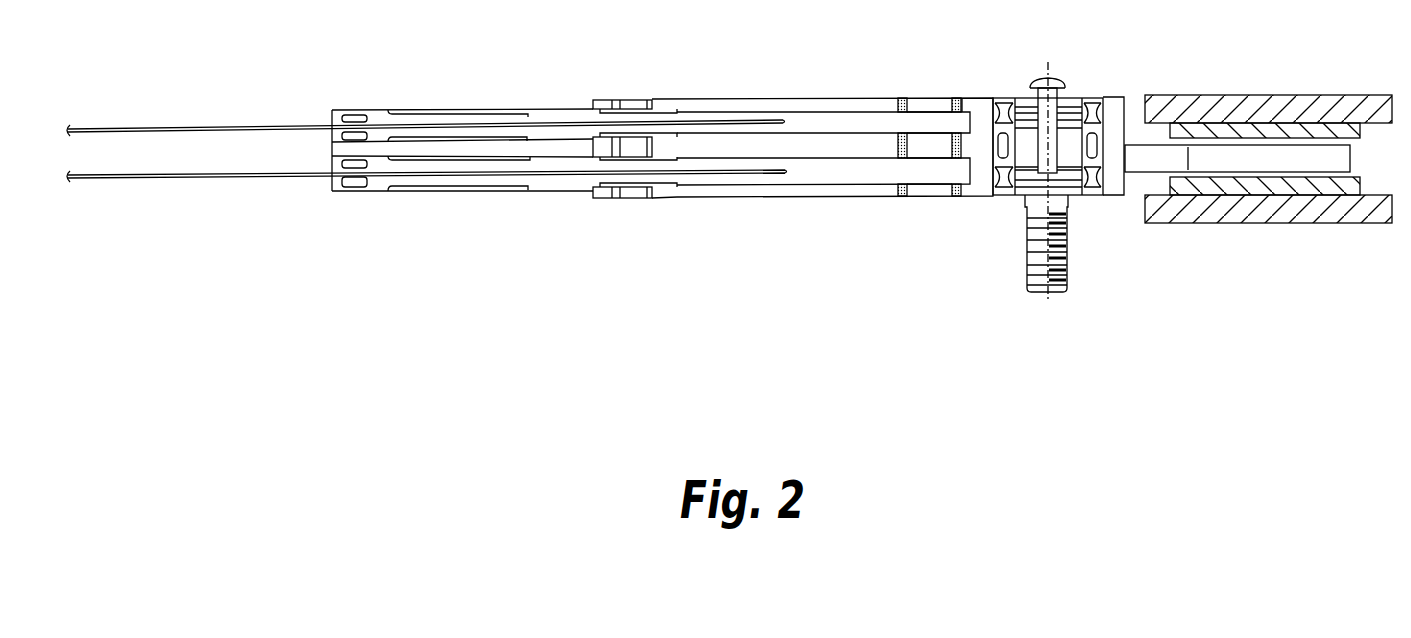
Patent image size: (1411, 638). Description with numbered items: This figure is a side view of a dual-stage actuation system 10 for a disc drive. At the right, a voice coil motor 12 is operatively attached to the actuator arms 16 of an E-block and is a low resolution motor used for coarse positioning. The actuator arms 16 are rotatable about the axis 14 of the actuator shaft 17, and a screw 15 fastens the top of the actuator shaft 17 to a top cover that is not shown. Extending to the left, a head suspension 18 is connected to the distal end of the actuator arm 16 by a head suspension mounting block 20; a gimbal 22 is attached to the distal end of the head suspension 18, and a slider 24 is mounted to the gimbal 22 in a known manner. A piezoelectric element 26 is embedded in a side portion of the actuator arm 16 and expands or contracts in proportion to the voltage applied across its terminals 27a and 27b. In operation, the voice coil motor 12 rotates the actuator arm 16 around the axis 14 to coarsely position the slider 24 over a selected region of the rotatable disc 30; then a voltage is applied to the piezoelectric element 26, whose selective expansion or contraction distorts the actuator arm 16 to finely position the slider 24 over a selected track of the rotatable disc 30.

The dual-stage actuation system 10 is at (862, 257).
The voice coil motor 12 is at (1265, 94).
The axis 14 is at (1045, 253).
The screw 15 is at (1060, 80).
The actuator arm 16 is at (790, 98).
The actuator shaft 17 is at (1027, 243).
The head suspension 18 is at (529, 110).
The head suspension mounting block 20 is at (634, 135).
The gimbal 22 is at (372, 112).
The slider 24 is at (328, 113).
The piezoelectric element 26 is at (927, 98).
The terminal 27a is at (903, 98).
The terminal 27b is at (957, 98).
The rotatable disc 30 is at (218, 173).